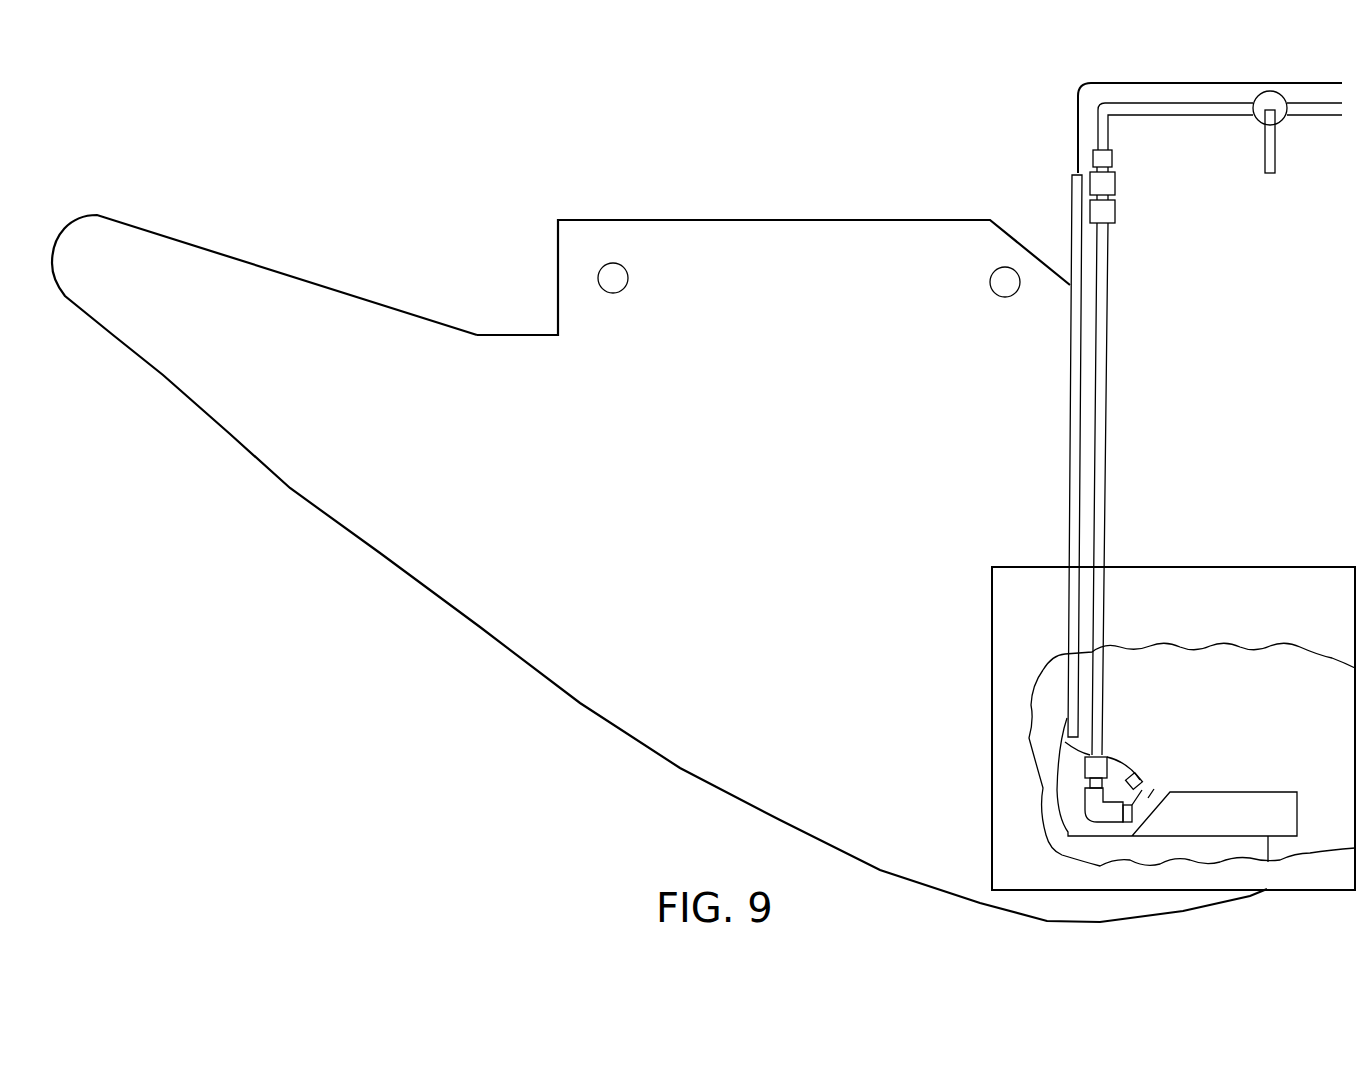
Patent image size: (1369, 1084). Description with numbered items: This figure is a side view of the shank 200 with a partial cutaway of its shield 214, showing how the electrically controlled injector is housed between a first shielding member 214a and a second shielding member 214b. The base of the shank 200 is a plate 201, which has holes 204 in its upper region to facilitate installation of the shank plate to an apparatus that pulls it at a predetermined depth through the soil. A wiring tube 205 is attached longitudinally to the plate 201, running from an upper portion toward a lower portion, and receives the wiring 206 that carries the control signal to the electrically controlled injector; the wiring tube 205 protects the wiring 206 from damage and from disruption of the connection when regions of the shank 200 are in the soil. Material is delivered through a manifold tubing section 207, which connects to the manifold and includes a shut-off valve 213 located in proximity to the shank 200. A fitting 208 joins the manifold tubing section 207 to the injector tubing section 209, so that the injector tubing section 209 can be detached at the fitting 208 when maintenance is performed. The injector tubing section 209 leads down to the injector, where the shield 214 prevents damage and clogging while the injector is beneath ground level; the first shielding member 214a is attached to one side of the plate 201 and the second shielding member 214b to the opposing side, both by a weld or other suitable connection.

The shank 200 is at (659, 568).
The plate 201 is at (680, 768).
The holes 204 is at (617, 293).
The wiring tube 205 is at (1071, 212).
The wiring 206 is at (1077, 119).
The manifold tubing section 207 is at (1193, 117).
The fitting 208 is at (1120, 195).
The injector tubing section 209 is at (1105, 469).
The shut-off valve 213 is at (1286, 123).
The shield 214 is at (1138, 709).
The first shielding member 214a is at (1193, 590).
The second shielding member 214b is at (1272, 670).